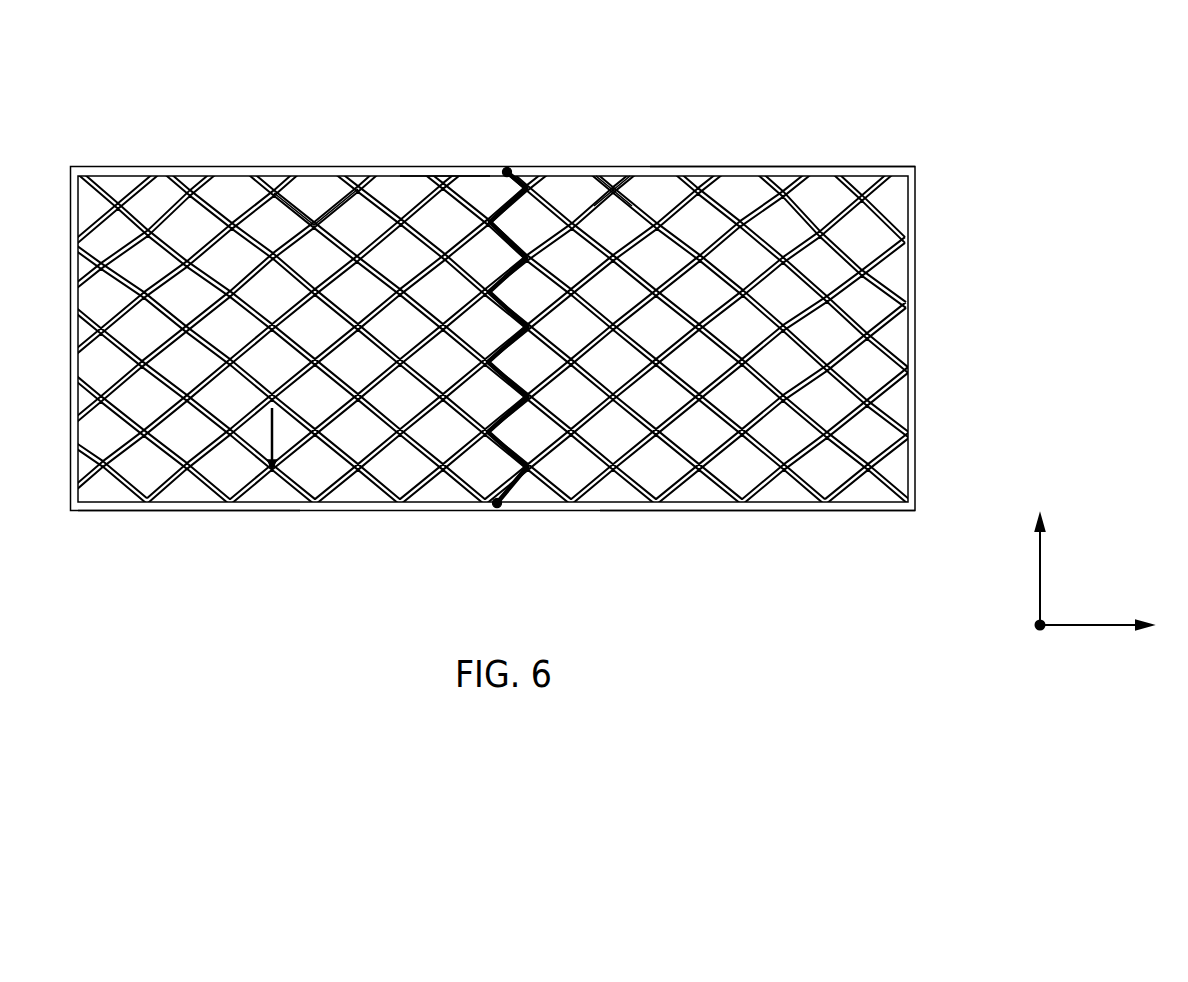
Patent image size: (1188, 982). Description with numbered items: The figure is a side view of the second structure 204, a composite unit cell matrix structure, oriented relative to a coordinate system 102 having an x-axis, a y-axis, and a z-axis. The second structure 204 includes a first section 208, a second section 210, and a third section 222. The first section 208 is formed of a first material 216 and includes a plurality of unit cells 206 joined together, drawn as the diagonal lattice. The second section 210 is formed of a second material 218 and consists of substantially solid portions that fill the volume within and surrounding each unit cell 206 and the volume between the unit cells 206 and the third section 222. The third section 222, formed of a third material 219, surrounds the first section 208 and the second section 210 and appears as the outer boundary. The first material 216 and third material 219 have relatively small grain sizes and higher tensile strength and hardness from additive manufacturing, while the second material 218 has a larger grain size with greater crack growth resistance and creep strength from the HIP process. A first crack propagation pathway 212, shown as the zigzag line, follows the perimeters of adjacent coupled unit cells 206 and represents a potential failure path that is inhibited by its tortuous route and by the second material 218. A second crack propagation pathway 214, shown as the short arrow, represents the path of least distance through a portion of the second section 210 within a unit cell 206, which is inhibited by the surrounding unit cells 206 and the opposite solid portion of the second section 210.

The second structure 204 is at (385, 78).
The second section 210 is at (317, 193).
The first material 216 is at (443, 177).
The first section 208 is at (608, 185).
The third section 222 is at (708, 167).
The third material 219 is at (810, 167).
The unit cells 206 is at (150, 510).
The second material 218 is at (703, 507).
The first crack propagation pathway 212 is at (513, 488).
The second crack propagation pathway 214 is at (277, 443).
The coordinate system 102 is at (1011, 550).